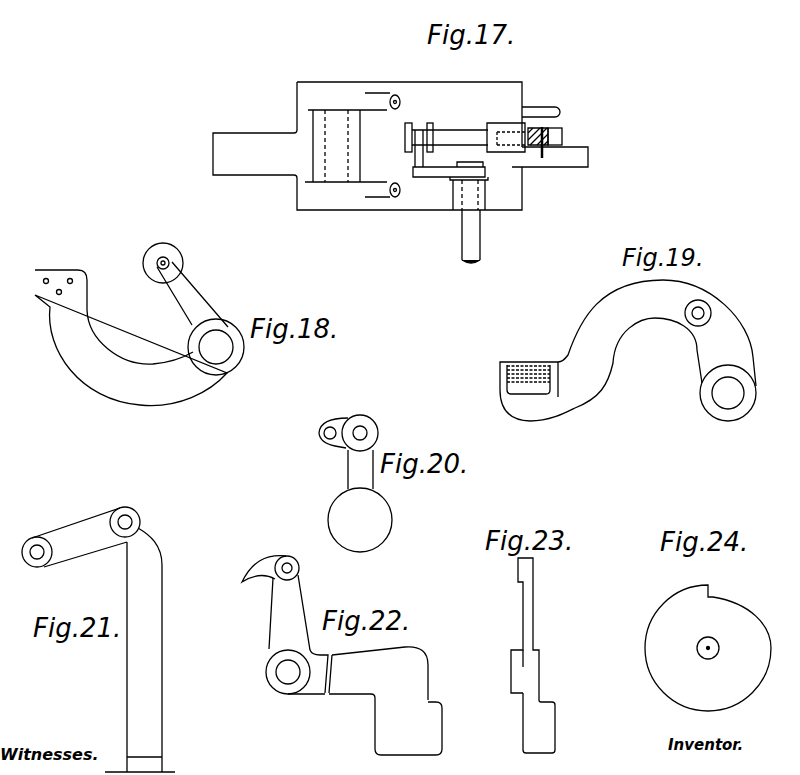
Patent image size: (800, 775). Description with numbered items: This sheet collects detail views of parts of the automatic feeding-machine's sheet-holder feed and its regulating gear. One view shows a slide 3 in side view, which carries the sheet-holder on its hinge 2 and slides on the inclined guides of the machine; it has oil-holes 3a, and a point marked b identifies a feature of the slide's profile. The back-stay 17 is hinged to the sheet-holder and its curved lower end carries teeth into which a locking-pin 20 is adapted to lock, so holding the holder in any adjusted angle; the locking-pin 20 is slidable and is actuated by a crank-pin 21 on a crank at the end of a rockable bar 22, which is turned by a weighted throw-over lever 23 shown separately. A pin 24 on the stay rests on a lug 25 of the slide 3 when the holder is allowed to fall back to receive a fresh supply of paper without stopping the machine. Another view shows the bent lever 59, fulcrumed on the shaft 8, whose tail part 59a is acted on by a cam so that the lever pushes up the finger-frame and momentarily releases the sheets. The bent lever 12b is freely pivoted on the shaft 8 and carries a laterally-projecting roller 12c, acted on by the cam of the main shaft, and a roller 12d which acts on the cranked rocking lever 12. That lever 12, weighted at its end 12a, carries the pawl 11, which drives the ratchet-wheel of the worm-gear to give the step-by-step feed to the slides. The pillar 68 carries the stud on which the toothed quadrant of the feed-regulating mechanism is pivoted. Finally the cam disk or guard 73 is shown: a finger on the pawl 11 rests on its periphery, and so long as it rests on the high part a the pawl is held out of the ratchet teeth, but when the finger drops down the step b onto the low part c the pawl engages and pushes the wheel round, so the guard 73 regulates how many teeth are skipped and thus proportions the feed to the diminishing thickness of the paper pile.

In FIG. 17, the slide 3 is at (455, 95).
In FIG. 17, the oil-holes 3a is at (383, 230).
In FIG. 17, the step b is at (253, 154).
In FIG. 24, the step b is at (712, 592).
In FIG. 17, the hinge 2 is at (335, 163).
In FIG. 17, the locking-pin 20 is at (460, 138).
In FIG. 17, the crank-pin 21 is at (420, 153).
In FIG. 17, the rockable bar 22 is at (483, 238).
In FIG. 17, the back-stay 17 is at (557, 133).
In FIG. 17, the pin 24 is at (543, 150).
In FIG. 17, the lug 25 is at (580, 170).
In FIG. 18, the bent lever 59 is at (135, 387).
In FIG. 18, the tail part 59a is at (193, 306).
In FIG. 19, the bent lever 12b is at (603, 365).
In FIG. 19, the roller 12c is at (707, 310).
In FIG. 19, the roller 12d is at (523, 358).
In FIG. 19, the shaft 8 is at (723, 397).
In FIG. 20, the weighted throw-over lever 23 is at (357, 470).
In FIG. 21, the pillar 68 is at (152, 667).
In FIG. 22, the pawl 11 is at (263, 563).
In FIG. 22, the cranked rocking lever 12 is at (345, 680).
In FIG. 23, the cranked rocking lever 12 is at (528, 625).
In FIG. 22, the weighted end 12a is at (408, 728).
In FIG. 23, the weighted end 12a is at (542, 728).
In FIG. 24, the cam disk or guard 73 is at (700, 685).
In FIG. 24, the high part a is at (707, 585).
In FIG. 24, the low part c is at (760, 608).